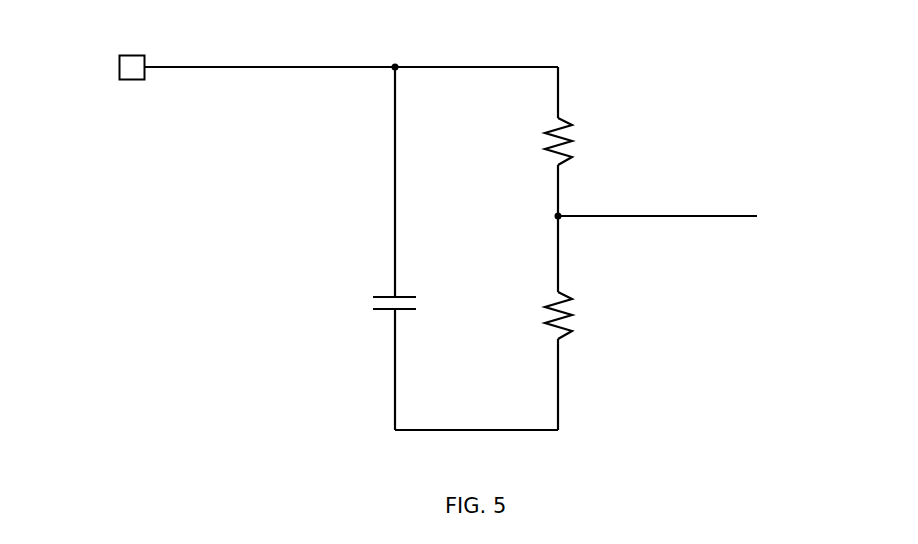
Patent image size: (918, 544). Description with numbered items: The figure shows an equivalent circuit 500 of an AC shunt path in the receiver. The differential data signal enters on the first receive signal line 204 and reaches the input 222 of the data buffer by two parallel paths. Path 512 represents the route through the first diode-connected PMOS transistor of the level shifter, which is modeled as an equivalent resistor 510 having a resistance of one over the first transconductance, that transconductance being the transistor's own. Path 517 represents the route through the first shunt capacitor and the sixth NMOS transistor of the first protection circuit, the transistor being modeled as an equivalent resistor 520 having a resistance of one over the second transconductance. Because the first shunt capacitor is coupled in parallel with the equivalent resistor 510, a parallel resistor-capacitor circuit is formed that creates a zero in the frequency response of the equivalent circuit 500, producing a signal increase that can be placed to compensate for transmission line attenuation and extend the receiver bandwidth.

The equivalent circuit 500 is at (759, 64).
The first receive signal line 204 is at (195, 66).
The path 512 is at (512, 66).
The path 517 is at (393, 78).
The equivalent resistor 510 is at (545, 140).
The equivalent resistor 520 is at (545, 314).
The input of the data buffer 222 is at (693, 215).